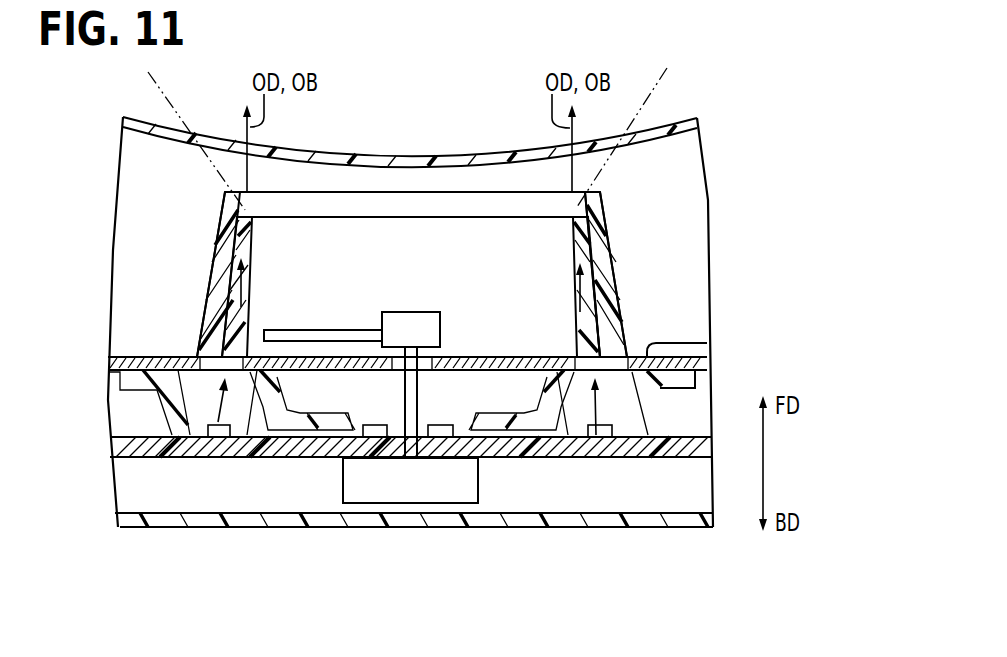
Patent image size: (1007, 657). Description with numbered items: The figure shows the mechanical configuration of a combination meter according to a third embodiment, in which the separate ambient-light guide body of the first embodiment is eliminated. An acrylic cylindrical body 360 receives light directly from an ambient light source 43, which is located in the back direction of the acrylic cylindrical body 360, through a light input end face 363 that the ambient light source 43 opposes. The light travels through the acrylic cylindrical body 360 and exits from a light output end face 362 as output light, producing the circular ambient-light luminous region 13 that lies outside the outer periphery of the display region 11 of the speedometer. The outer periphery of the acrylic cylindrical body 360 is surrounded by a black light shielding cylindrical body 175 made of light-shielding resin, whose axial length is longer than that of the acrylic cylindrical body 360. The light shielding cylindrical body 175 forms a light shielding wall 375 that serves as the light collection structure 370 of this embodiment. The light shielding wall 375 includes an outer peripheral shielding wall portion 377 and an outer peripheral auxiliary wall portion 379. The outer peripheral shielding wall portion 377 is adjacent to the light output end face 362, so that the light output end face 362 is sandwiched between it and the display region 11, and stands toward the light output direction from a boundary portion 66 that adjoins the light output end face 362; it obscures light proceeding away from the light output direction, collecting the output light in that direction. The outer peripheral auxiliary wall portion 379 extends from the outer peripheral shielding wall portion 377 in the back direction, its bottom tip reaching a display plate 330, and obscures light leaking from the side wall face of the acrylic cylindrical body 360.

The display region 11 is at (469, 338).
The ambient-light luminous region 13 is at (258, 203).
The ambient light source 43 is at (220, 440).
The boundary portion 66 is at (240, 217).
The light shielding cylindrical body 175 is at (614, 278).
The display plate 330 is at (702, 344).
The acrylic cylindrical body 360 is at (621, 311).
The light output end face 362 is at (572, 217).
The light input end face 363 is at (697, 373).
The light collection structure 370 is at (707, 260).
The light shielding wall 375 is at (594, 193).
The outer peripheral shielding wall portion 377 is at (228, 200).
The outer peripheral auxiliary wall portion 379 is at (205, 305).